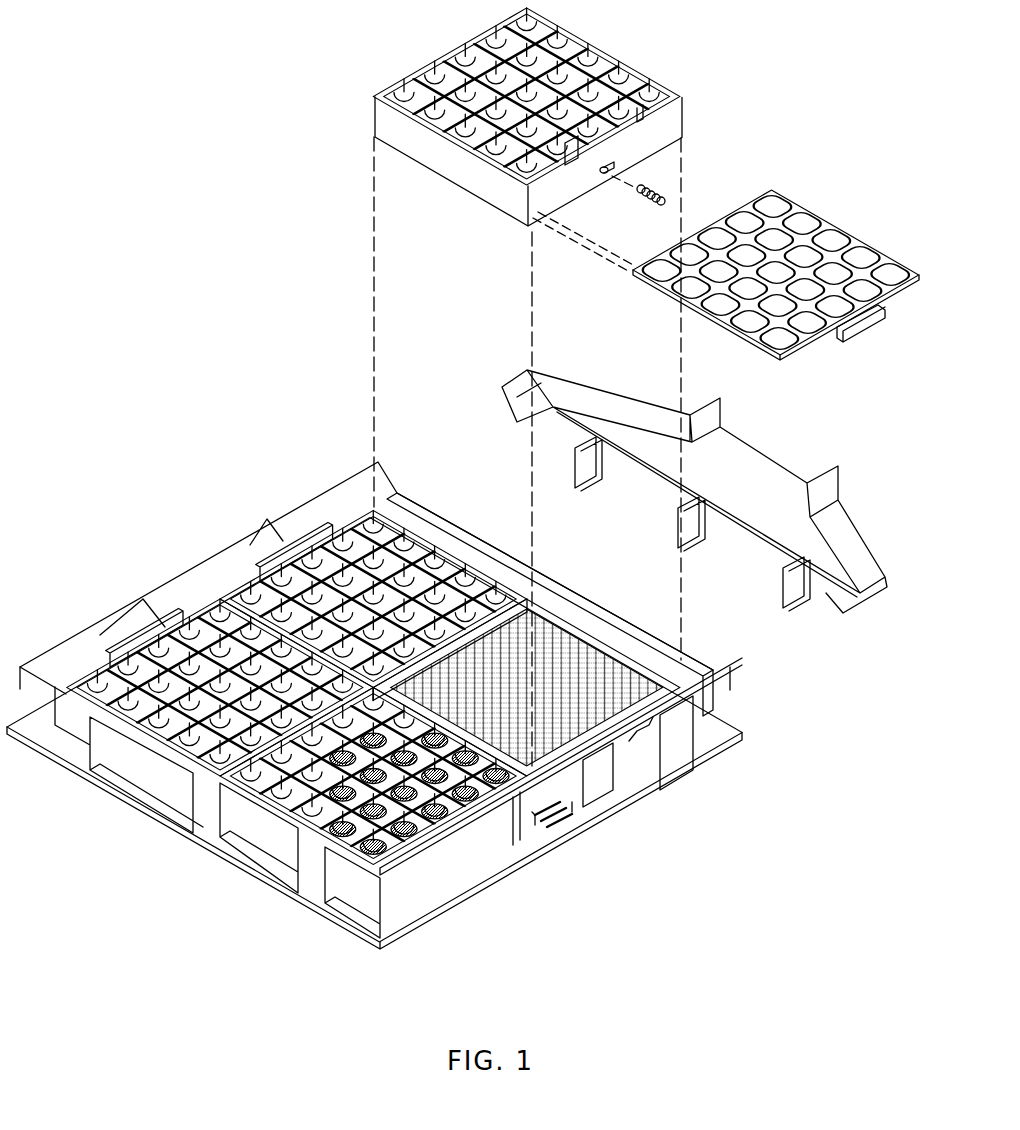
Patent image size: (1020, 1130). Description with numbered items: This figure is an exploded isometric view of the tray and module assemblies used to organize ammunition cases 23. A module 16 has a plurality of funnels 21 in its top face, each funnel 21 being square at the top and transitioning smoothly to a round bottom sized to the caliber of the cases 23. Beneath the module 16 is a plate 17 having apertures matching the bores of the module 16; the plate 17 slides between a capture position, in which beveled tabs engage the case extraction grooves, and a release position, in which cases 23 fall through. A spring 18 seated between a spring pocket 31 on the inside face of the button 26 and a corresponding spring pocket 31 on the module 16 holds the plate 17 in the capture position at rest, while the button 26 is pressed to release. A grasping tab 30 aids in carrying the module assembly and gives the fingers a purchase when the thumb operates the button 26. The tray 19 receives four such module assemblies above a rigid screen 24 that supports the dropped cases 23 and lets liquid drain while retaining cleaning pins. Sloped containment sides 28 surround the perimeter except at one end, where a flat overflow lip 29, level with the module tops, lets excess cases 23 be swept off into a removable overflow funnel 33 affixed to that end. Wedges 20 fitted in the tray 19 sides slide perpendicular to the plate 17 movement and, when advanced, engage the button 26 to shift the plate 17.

The module 16 is at (630, 70).
The plate 17 is at (853, 237).
The spring 18 is at (665, 190).
The tray 19 is at (148, 817).
The wedges 20 is at (552, 823).
The funnels 21 is at (280, 788).
The ammunition cases 23 is at (395, 861).
The screen 24 is at (590, 715).
The button 26 is at (855, 329).
The containment sides 28 is at (210, 582).
The overflow lip 29 is at (552, 603).
The grasping tab 30 is at (283, 535).
The spring pocket 31 is at (607, 163).
The overflow funnel 33 is at (853, 528).